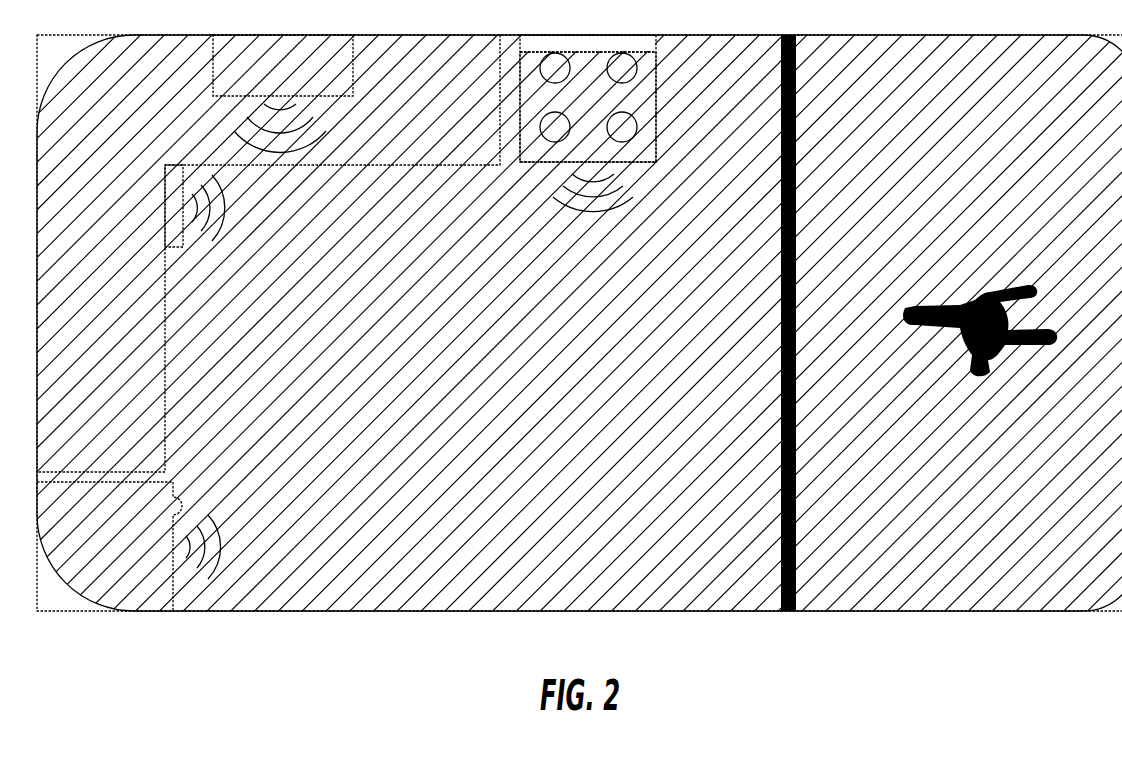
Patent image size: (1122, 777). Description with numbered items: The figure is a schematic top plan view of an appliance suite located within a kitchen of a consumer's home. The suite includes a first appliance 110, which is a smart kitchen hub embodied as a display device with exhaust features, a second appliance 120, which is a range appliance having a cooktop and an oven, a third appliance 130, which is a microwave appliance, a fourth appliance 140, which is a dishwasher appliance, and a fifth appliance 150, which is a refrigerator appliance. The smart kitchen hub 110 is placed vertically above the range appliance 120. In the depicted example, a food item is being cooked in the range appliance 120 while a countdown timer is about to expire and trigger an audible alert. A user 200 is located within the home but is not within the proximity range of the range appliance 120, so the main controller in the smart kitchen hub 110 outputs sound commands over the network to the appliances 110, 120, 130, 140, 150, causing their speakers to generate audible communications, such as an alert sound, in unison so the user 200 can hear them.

The first appliance 110 is at (657, 44).
The second appliance 120 is at (646, 162).
The third appliance 130 is at (300, 82).
The fourth appliance 140 is at (165, 210).
The fifth appliance 150 is at (123, 551).
The user 200 is at (985, 283).